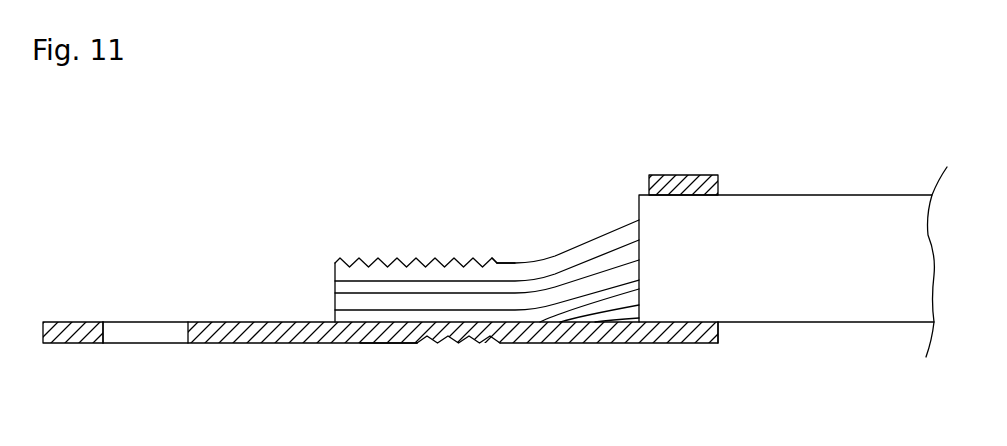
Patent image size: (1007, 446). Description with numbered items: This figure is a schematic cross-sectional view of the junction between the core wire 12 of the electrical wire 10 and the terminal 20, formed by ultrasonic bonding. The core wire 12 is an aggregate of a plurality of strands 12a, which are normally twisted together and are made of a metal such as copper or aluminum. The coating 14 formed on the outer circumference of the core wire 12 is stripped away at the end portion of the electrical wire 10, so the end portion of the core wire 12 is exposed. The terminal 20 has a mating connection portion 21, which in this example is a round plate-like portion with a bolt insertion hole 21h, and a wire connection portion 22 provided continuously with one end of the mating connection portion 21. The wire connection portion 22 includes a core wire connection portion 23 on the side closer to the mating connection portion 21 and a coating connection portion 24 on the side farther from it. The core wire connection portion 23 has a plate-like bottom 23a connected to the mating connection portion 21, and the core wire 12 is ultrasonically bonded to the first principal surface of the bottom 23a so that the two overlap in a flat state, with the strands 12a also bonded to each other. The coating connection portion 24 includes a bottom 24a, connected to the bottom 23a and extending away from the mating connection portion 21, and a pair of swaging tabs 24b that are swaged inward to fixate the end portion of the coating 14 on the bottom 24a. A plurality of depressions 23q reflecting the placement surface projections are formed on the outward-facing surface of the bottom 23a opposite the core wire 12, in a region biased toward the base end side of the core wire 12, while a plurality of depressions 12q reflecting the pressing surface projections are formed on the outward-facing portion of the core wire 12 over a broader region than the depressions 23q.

The electrical wire 10 is at (823, 193).
The core wire 12 is at (337, 260).
The strand 12a is at (482, 278).
The depressions 12q is at (412, 262).
The coating 14 is at (903, 192).
The terminal 20 is at (260, 344).
The mating connection portion 21 is at (72, 322).
The bolt insertion hole 21h is at (105, 337).
The wire connection portion 22 is at (584, 344).
The core wire connection portion 23 is at (332, 345).
The bottom 23a is at (386, 344).
The depressions 23q is at (460, 346).
The coating connection portion 24 is at (718, 330).
The bottom 24a is at (676, 344).
The swaging tabs 24b is at (688, 173).